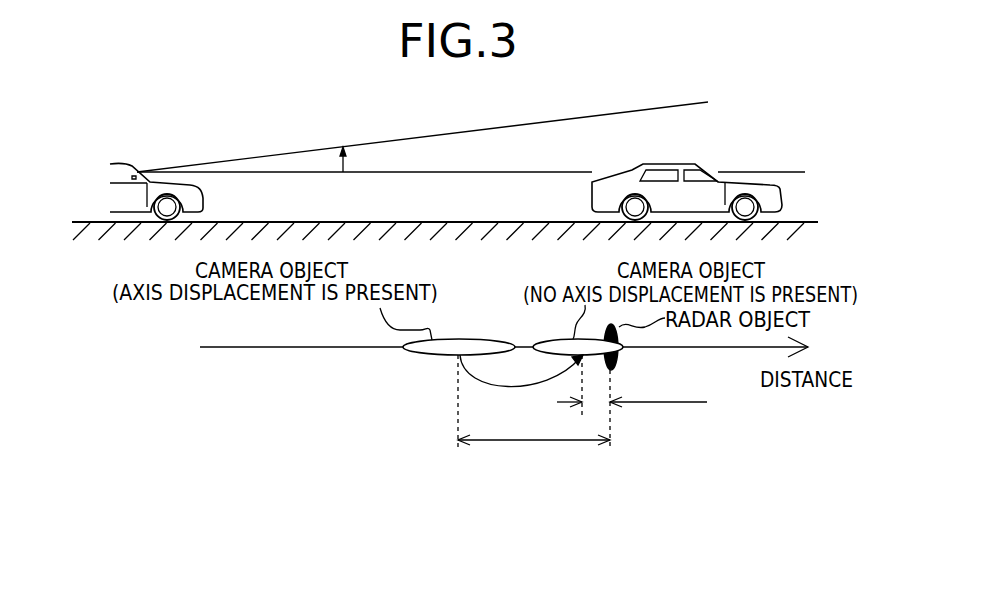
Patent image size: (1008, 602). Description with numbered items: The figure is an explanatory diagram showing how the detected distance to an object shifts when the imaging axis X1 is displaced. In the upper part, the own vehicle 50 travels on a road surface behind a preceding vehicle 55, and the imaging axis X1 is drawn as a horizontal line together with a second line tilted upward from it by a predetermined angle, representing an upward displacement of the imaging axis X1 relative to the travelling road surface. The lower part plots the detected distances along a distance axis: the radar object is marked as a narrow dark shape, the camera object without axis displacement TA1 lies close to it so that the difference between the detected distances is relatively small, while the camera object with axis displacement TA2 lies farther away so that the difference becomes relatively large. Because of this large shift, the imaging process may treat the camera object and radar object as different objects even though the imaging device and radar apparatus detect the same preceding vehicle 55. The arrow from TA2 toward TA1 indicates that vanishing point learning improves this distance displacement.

The own vehicle 50 is at (118, 164).
The preceding vehicle 55 is at (671, 164).
The imaging axis X1 is at (489, 170).
The camera object without axis displacement TA1 is at (538, 338).
The camera object with axis displacement TA2 is at (425, 355).